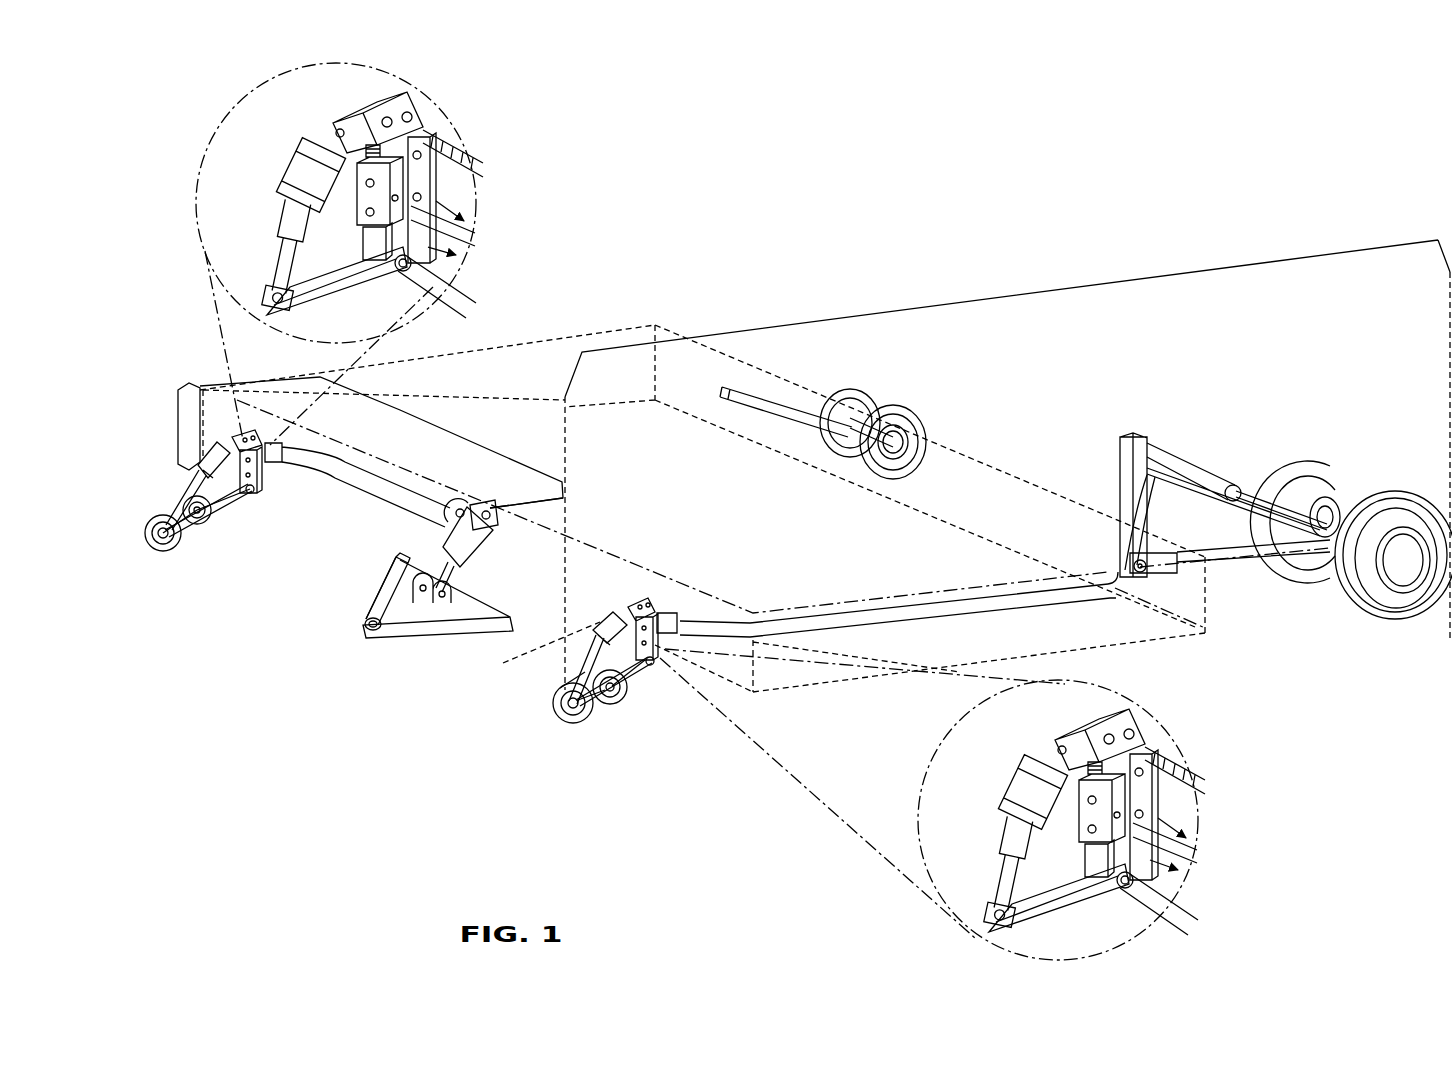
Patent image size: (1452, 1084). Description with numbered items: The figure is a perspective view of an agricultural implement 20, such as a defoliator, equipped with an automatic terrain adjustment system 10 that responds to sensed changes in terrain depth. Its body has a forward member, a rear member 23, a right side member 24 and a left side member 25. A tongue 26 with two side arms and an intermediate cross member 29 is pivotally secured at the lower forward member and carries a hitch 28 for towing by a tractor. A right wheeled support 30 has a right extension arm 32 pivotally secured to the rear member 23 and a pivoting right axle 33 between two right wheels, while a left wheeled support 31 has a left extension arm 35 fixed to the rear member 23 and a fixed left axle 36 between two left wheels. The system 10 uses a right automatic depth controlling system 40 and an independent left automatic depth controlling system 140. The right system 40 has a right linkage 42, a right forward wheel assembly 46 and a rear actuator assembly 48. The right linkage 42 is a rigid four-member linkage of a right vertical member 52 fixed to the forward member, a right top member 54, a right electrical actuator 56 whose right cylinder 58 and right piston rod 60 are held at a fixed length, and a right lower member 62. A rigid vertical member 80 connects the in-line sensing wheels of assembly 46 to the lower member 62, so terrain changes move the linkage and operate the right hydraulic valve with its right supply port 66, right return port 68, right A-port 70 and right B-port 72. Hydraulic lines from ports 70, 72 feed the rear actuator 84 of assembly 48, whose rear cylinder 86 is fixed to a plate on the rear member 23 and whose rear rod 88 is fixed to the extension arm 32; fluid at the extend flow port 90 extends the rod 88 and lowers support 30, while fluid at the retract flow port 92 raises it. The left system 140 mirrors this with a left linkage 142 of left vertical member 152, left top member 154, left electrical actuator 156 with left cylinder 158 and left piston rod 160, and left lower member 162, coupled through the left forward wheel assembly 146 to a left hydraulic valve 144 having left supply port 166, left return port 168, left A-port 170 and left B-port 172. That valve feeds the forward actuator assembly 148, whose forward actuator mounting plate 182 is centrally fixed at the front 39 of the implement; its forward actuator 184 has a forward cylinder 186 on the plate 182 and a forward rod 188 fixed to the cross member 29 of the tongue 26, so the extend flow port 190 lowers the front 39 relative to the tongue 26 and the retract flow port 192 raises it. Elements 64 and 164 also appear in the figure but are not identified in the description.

The automatic terrain adjustment system 10 is at (825, 460).
The agricultural implement 20 is at (825, 466).
The rear member 23 is at (955, 447).
The right side member 24 is at (1140, 634).
The left side member 25 is at (611, 322).
The tongue 26 is at (383, 615).
The hitch 28 is at (358, 629).
The cross member 29 is at (377, 575).
The right wheeled support 30 is at (1351, 540).
The left wheeled support 31 is at (864, 410).
The right extension arm 32 is at (1228, 564).
The right axle 33 is at (1333, 500).
The left extension arm 35 is at (785, 420).
The left axle 36 is at (862, 397).
The front 39 is at (180, 450).
The right automatic depth controlling system 40 is at (1035, 298).
The right linkage 42 is at (1082, 811).
The right forward wheel assembly 46 is at (590, 699).
The rear actuator assembly 48 is at (1225, 492).
The right vertical member 52 is at (1177, 794).
The right top member 54 is at (1126, 725).
The right electrical actuator 56 is at (1006, 834).
The right cylinder 58 is at (1101, 886).
The right piston rod 60 is at (988, 871).
The right lower member 62 is at (1092, 921).
The link bar 64 is at (1181, 895).
The right supply port 66 is at (1162, 802).
The right return port 68 is at (1018, 785).
The right A-port 70 is at (1181, 830).
The right B-port 72 is at (1177, 880).
The rigid vertical member 80 is at (557, 688).
The rear actuator 84 is at (1211, 471).
The rear cylinder 86 is at (1200, 480).
The rear rod 88 is at (1268, 554).
The extend flow port 90 is at (1160, 467).
The retract flow port 92 is at (1243, 488).
The left automatic depth controlling system 140 is at (405, 408).
The left linkage 142 is at (380, 195).
The left hydraulic valve 144 is at (455, 178).
The left forward wheel assembly 146 is at (200, 527).
The forward actuator assembly 148 is at (470, 572).
The left vertical member 152 is at (464, 287).
The left top member 154 is at (409, 109).
The left electrical actuator 156 is at (356, 214).
The left cylinder 158 is at (373, 273).
The left piston rod 160 is at (259, 254).
The left lower member 162 is at (375, 304).
The mounting plate 164 is at (486, 181).
The left supply port 166 is at (493, 164).
The left return port 168 is at (291, 165).
The left A-port 170 is at (462, 214).
The left B-port 172 is at (371, 214).
The forward actuator mounting plate 182 is at (490, 505).
The forward actuator 184 is at (500, 507).
The forward cylinder 186 is at (470, 550).
The forward rod 188 is at (512, 618).
The extend flow port 190 is at (462, 500).
The retract flow port 192 is at (447, 538).